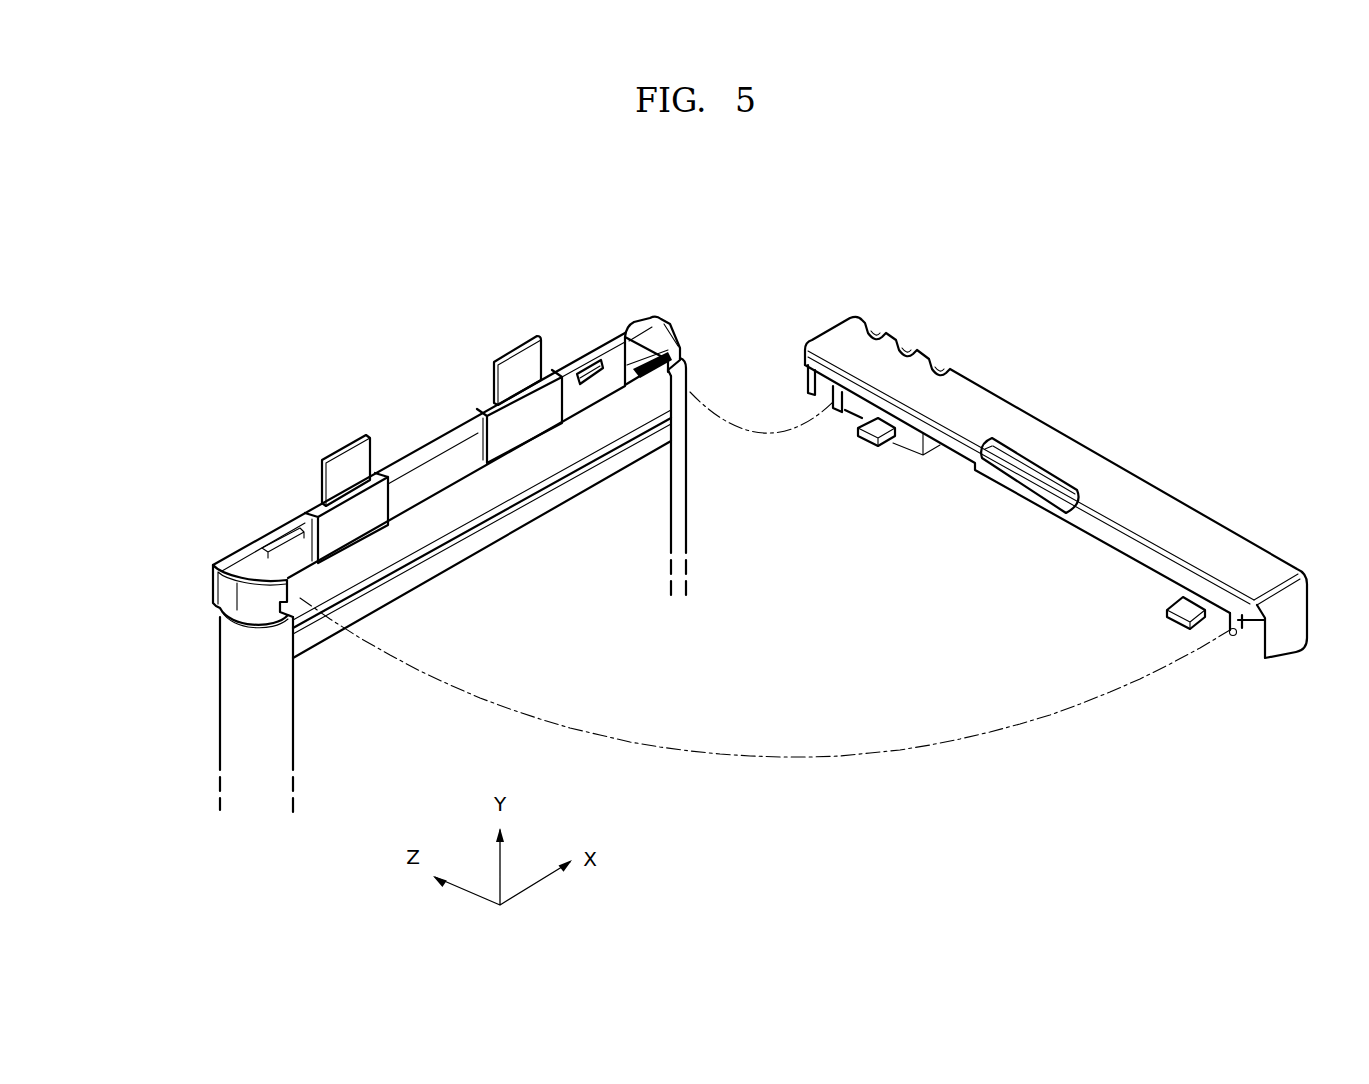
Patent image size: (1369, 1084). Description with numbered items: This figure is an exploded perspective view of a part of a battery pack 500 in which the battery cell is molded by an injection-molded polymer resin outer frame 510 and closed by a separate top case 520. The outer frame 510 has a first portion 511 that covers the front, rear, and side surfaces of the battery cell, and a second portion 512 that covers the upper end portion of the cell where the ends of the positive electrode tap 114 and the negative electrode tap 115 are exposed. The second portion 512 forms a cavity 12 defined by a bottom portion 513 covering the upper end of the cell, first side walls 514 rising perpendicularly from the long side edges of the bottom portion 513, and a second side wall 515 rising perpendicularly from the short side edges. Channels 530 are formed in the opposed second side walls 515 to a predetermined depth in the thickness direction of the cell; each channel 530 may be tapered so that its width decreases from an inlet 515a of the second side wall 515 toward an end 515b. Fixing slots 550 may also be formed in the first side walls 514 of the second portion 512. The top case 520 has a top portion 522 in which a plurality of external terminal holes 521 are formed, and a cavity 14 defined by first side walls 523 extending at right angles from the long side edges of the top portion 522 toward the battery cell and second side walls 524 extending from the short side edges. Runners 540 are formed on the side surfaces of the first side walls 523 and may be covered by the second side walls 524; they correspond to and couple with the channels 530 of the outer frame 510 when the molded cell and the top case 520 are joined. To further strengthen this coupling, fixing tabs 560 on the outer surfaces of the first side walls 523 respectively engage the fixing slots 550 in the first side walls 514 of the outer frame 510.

The battery pack 500 is at (285, 293).
The outer frame 510 is at (113, 617).
The first portion 511 is at (332, 692).
The second portion 512 is at (213, 615).
The bottom portion 513 is at (323, 585).
The first side walls 514 is at (430, 445).
The second side wall 515 is at (246, 570).
The inlet 515a is at (681, 370).
The end 515b is at (632, 325).
The fixing slots 550 is at (598, 372).
The channels 530 is at (657, 393).
The positive electrode tap 114 is at (512, 355).
The negative electrode tap 115 is at (345, 452).
The cavity 12 is at (440, 515).
The top case 520 is at (1167, 468).
The external terminal holes 521 is at (955, 360).
The top portion 522 is at (1218, 545).
The first side walls 523 is at (915, 440).
The second side walls 524 is at (1285, 635).
The runners 540 is at (835, 396).
The fixing tabs 560 is at (1168, 613).
The cavity 14 is at (1137, 565).